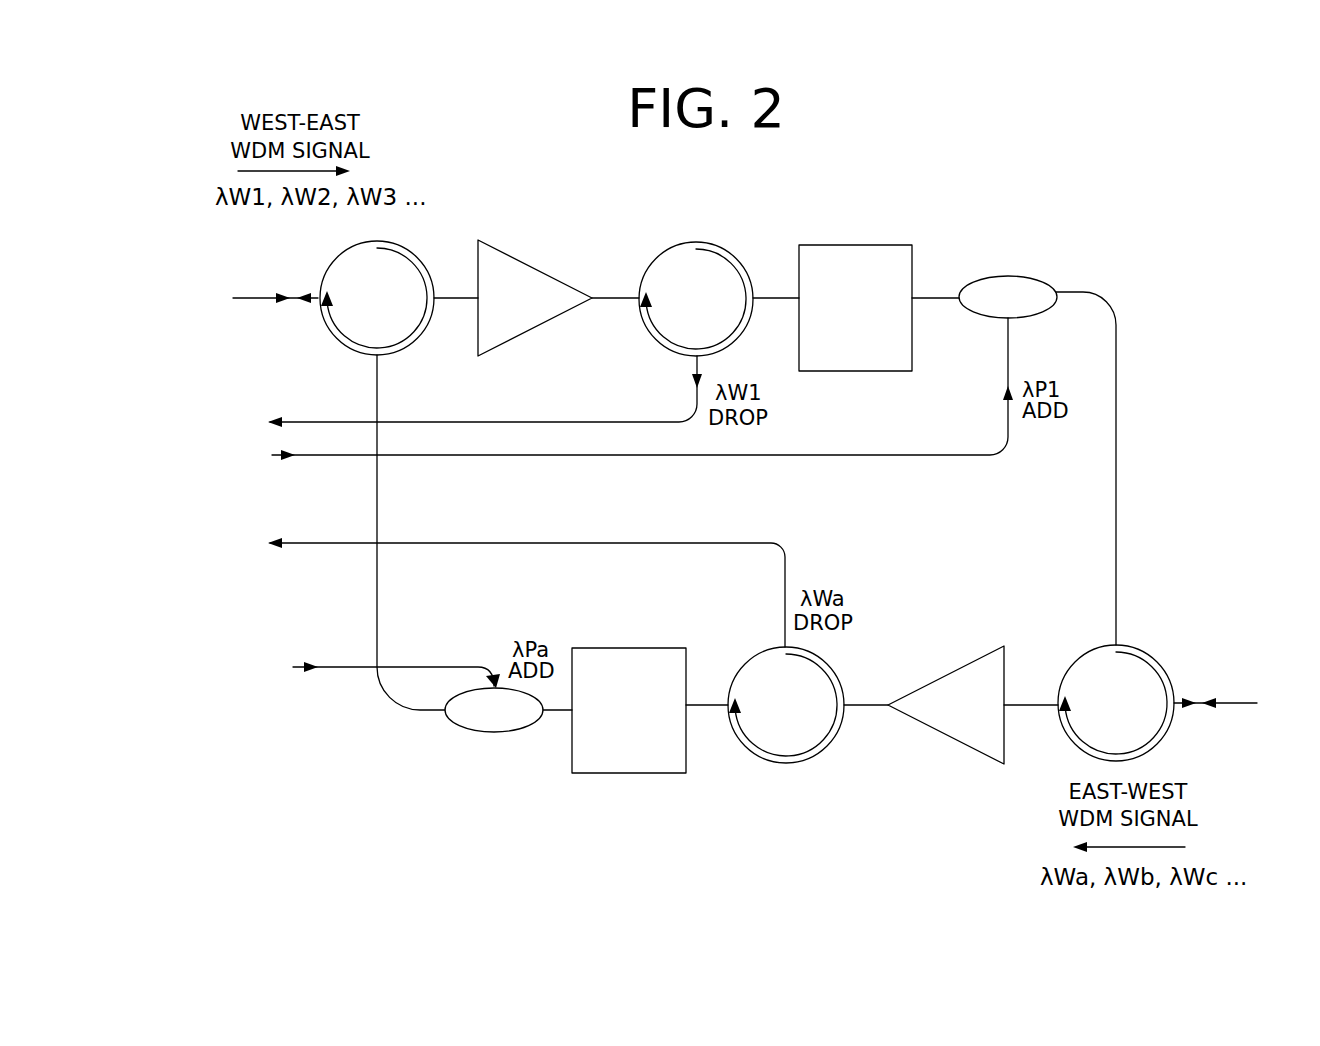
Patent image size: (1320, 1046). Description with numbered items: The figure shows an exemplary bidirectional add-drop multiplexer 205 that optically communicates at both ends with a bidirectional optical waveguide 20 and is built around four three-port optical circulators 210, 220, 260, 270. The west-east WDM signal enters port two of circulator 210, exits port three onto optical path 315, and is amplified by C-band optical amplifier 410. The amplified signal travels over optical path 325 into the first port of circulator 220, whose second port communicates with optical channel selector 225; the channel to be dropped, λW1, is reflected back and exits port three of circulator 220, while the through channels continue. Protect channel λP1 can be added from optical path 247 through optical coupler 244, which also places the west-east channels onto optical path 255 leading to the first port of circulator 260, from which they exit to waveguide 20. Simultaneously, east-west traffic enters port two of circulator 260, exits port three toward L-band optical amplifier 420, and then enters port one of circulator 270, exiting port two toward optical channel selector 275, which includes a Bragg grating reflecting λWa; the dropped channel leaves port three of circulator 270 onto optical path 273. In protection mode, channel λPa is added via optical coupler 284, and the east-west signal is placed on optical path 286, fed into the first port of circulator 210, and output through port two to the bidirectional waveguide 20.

The bidirectional optical waveguide 20 is at (246, 297).
The bidirectional add-drop multiplexer 205 is at (335, 803).
The optical circulator 210 is at (336, 336).
The optical circulator 220 is at (716, 243).
The optical channel selector 225 is at (885, 244).
The optical coupler 244 is at (1021, 276).
The optical path 247 is at (914, 454).
The optical path 255 is at (1117, 378).
The optical circulator 260 is at (1141, 656).
The optical circulator 270 is at (805, 764).
The optical path 273 is at (705, 542).
The optical channel selector 275 is at (667, 774).
The optical coupler 284 is at (500, 733).
The optical path 286 is at (378, 632).
The optical path 315 is at (456, 318).
The optical path 325 is at (608, 312).
The optical amplifier 410 is at (517, 255).
The optical amplifier 420 is at (947, 737).